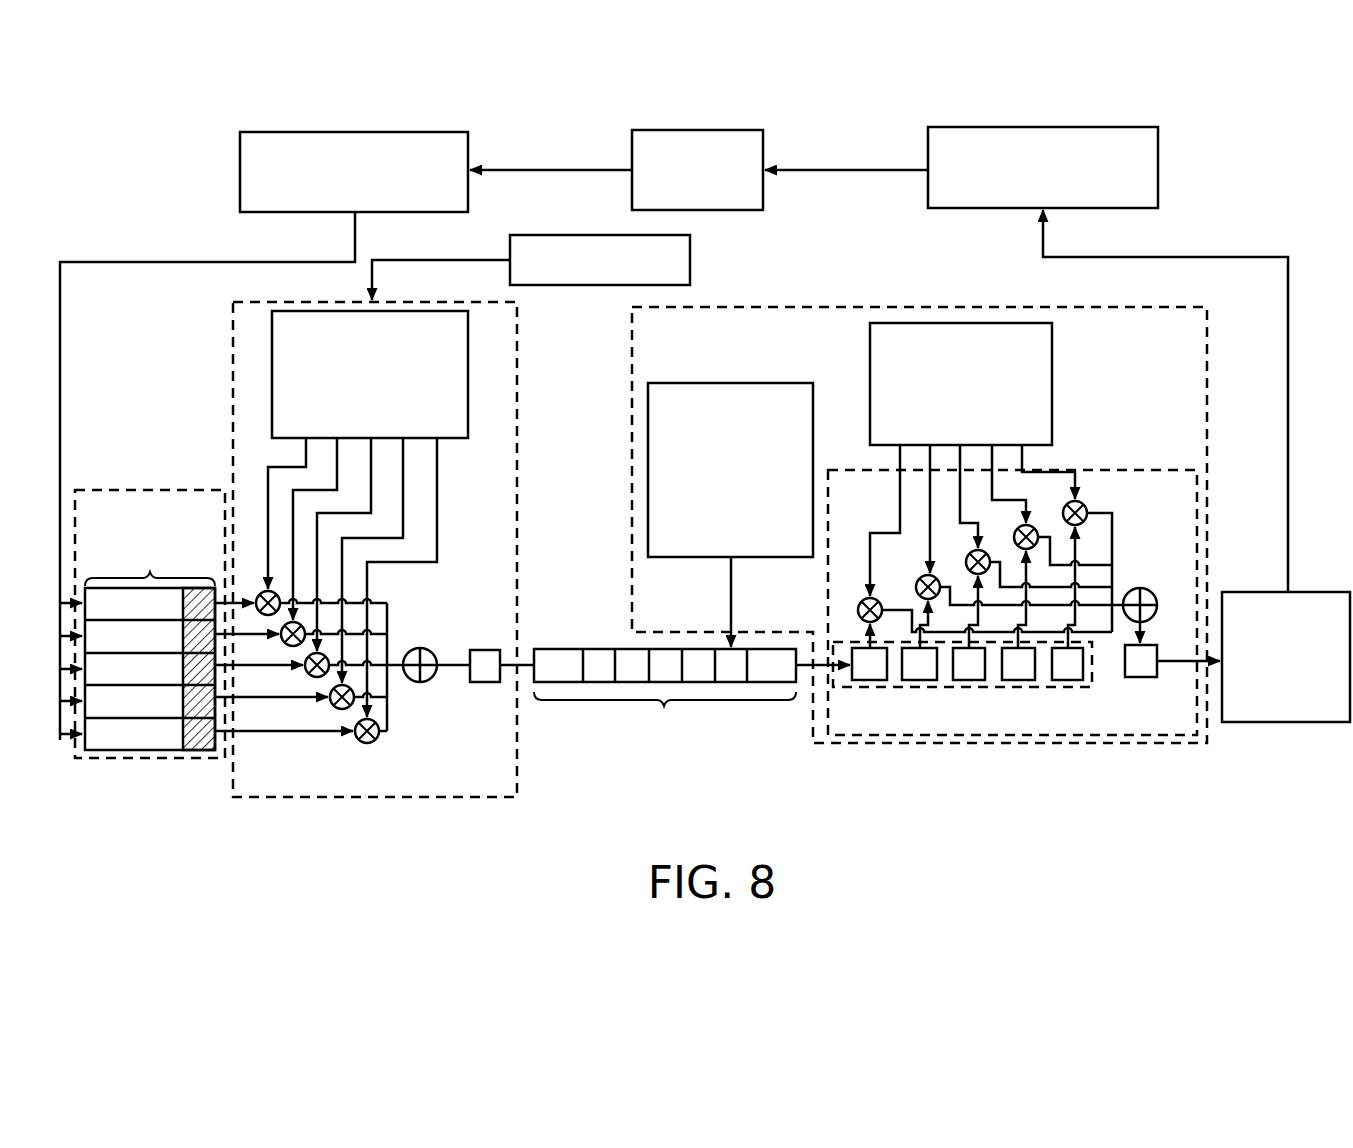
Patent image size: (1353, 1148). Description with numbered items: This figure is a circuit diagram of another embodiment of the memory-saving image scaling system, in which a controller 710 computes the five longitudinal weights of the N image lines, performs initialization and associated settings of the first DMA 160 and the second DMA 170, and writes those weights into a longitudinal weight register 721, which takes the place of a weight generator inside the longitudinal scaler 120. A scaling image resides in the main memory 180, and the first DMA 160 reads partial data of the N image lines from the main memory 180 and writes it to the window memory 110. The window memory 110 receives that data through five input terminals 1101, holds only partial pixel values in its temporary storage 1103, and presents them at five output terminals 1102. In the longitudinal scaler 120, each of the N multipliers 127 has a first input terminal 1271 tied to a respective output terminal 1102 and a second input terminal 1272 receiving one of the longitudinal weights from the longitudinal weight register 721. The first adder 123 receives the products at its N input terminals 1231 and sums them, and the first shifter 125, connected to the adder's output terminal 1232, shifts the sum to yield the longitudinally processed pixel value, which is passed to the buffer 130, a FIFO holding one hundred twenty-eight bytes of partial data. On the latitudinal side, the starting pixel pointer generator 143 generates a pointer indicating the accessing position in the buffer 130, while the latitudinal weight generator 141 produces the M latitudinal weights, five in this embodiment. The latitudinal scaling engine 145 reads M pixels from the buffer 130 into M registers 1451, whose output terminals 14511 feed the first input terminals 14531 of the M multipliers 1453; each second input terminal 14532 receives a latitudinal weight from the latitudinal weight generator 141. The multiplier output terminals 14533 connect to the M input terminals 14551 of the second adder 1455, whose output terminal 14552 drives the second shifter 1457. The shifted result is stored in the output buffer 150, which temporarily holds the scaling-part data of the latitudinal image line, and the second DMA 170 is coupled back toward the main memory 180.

The window memory 110 is at (202, 490).
The input terminals 1101 is at (75, 746).
The output terminals 1102 is at (215, 760).
The temporary storage 1103 is at (129, 758).
The longitudinal scaler 120 is at (233, 393).
The longitudinal weight register 721 is at (456, 440).
The multipliers 127 is at (360, 744).
The first input terminal 1271 is at (322, 734).
The second input terminal 1272 is at (384, 703).
The input terminals 1231 is at (388, 624).
The output terminal 1232 is at (448, 636).
The first adder 123 is at (425, 682).
The first shifter 125 is at (486, 650).
The buffer 130 is at (630, 649).
The starting pixel pointer generator 143 is at (700, 560).
The latitudinal weight generator 141 is at (870, 386).
The latitudinal scaling engine 145 is at (828, 576).
The registers 1451 is at (968, 680).
The output terminals 14511 is at (1100, 661).
The multipliers 1453 is at (858, 610).
The first input terminal 14531 is at (1080, 551).
The second input terminal 14532 is at (1075, 499).
The output terminals 14533 is at (1100, 505).
The second adder 1455 is at (1162, 572).
The input terminals 14551 is at (1124, 621).
The output terminal 14552 is at (1142, 625).
The second shifter 1457 is at (1145, 678).
The output buffer 150 is at (1333, 592).
The first direct memory access 160 is at (380, 213).
The second direct memory access 170 is at (942, 209).
The main memory 180 is at (765, 195).
The controller 710 is at (596, 235).